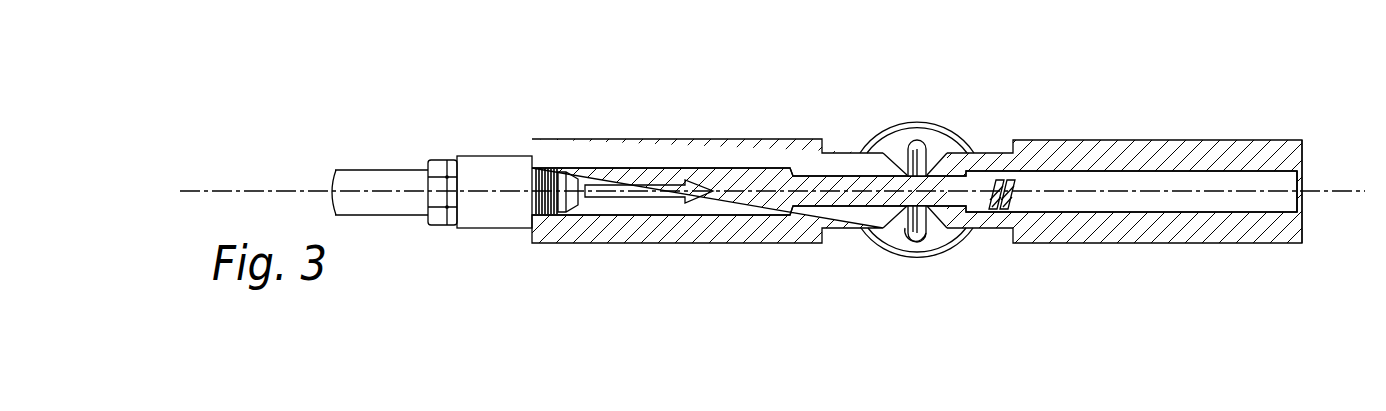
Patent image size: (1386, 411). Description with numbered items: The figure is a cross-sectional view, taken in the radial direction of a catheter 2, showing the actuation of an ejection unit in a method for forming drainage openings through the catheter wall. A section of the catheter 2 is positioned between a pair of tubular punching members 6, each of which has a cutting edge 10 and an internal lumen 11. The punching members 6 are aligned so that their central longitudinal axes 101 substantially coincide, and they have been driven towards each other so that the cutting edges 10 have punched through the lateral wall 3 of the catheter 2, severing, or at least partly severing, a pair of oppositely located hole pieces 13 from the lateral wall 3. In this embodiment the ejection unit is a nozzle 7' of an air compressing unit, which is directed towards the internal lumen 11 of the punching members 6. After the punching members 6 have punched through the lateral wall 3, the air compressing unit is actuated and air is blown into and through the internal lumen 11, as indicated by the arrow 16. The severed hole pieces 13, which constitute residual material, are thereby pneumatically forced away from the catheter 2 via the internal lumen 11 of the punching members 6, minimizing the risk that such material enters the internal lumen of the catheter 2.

The catheter 2 is at (922, 137).
The lateral wall 3 is at (902, 226).
The tubular punching members 6 is at (624, 139).
The nozzle 7' is at (432, 230).
The cutting edge 10 is at (907, 165).
The internal lumen 11 is at (753, 206).
The hole pieces 13 is at (1008, 209).
The arrow 16 is at (608, 192).
The central longitudinal axis 101 is at (1307, 189).